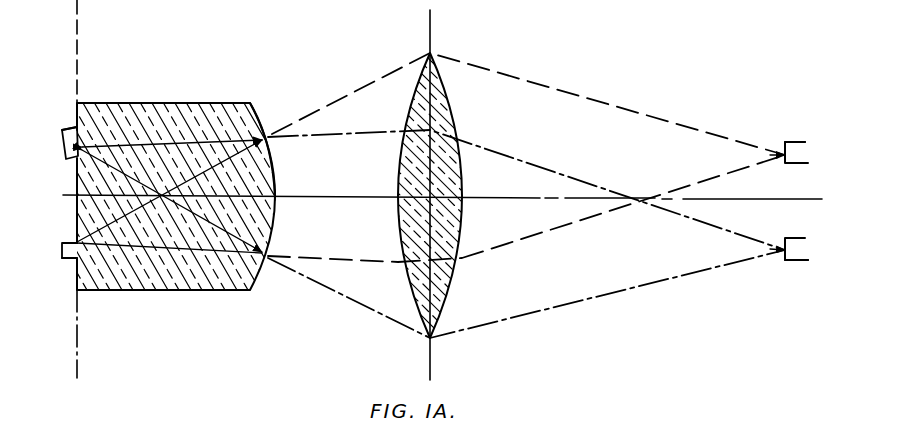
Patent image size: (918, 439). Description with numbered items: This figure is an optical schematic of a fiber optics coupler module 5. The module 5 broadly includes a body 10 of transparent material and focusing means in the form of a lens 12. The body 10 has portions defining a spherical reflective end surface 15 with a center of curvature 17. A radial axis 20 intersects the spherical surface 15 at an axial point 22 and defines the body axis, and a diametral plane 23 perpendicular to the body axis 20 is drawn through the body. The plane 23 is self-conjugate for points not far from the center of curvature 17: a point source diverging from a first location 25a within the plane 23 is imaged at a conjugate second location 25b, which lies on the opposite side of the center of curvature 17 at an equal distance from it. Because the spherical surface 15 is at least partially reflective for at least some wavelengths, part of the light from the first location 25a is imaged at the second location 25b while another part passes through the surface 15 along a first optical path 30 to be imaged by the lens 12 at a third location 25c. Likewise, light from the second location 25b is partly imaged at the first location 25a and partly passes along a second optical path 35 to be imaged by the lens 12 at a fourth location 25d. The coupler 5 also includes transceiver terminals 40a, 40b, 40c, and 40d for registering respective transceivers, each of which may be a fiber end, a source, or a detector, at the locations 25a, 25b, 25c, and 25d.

The fiber optics coupler module 5 is at (714, 313).
The body 10 is at (174, 98).
The lens 12 is at (452, 106).
The spherical reflective end surface 15 is at (296, 115).
The center of curvature 17 is at (76, 194).
The radial axis 20 is at (293, 199).
The axial point 22 is at (278, 196).
The diametral plane 23 is at (78, 33).
The first location 25a is at (72, 243).
The second location 25b is at (149, 189).
The third location 25c is at (783, 163).
The fourth location 25d is at (773, 217).
The first optical path 30 is at (371, 84).
The second optical path 35 is at (352, 305).
The transceiver terminal 40a is at (73, 258).
The transceiver terminal 40b is at (72, 128).
The transceiver terminal 40c is at (801, 140).
The transceiver terminal 40d is at (792, 262).